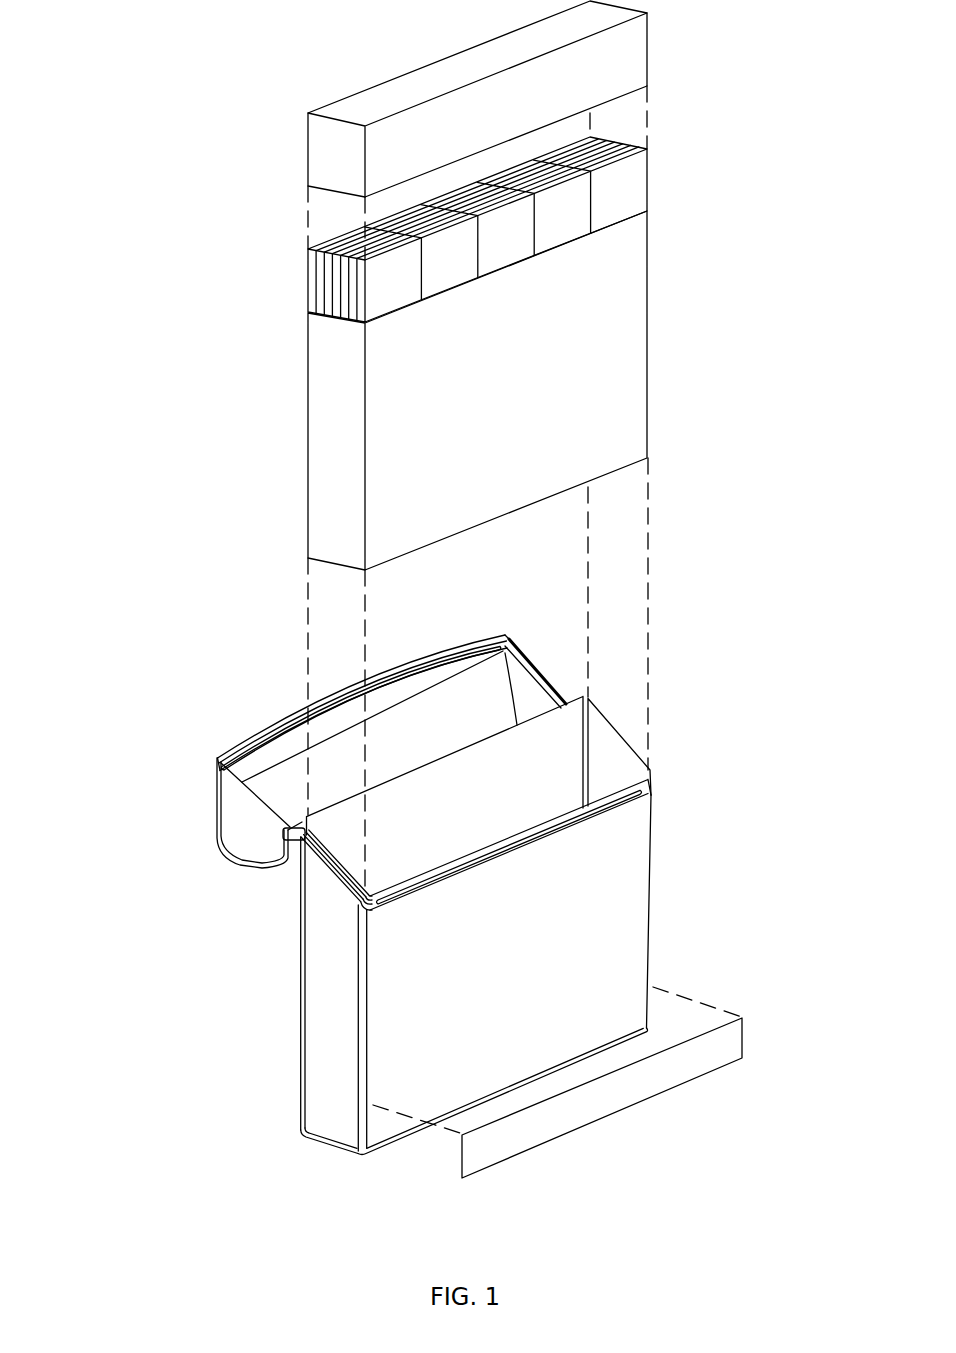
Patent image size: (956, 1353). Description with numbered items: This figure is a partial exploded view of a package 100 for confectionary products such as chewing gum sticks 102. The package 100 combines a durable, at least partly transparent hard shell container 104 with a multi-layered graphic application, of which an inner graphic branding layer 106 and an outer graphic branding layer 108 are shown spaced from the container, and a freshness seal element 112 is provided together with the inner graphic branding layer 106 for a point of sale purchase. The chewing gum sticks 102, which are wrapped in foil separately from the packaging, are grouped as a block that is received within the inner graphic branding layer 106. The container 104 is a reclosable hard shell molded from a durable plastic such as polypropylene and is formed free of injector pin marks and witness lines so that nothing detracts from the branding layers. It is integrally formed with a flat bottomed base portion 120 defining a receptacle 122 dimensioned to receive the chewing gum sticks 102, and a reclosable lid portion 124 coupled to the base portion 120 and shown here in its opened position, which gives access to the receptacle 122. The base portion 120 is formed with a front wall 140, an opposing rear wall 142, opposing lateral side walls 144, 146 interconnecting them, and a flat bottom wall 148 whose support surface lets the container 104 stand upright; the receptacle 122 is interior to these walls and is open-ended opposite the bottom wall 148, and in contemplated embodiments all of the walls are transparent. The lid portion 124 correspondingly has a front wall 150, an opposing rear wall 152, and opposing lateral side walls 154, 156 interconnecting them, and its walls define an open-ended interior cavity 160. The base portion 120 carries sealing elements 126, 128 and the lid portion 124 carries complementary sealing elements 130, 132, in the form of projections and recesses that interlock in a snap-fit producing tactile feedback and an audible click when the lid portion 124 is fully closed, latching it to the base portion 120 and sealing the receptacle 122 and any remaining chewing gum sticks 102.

The package 100 is at (150, 372).
The chewing gum sticks 102 is at (298, 282).
The container 104 is at (289, 1065).
The inner graphic branding layer 106 is at (650, 370).
The outer graphic branding layer 108 is at (730, 1046).
The freshness seal element 112 is at (636, 65).
The base portion 120 is at (482, 987).
The receptacle 122 is at (607, 763).
The lid portion 124 is at (386, 731).
The sealing element 126 is at (407, 890).
The sealing element 128 is at (340, 867).
The sealing element 130 is at (440, 653).
The sealing element 132 is at (543, 687).
The front wall 140 is at (625, 930).
The rear wall 142 is at (298, 969).
The lateral side wall 144 is at (320, 1097).
The lateral side wall 146 is at (650, 890).
The bottom wall 148 is at (348, 1151).
The front wall 150 is at (262, 732).
The rear wall 152 is at (295, 824).
The lateral side wall 154 is at (238, 830).
The lateral side wall 156 is at (553, 692).
The cavity 160 is at (485, 702).